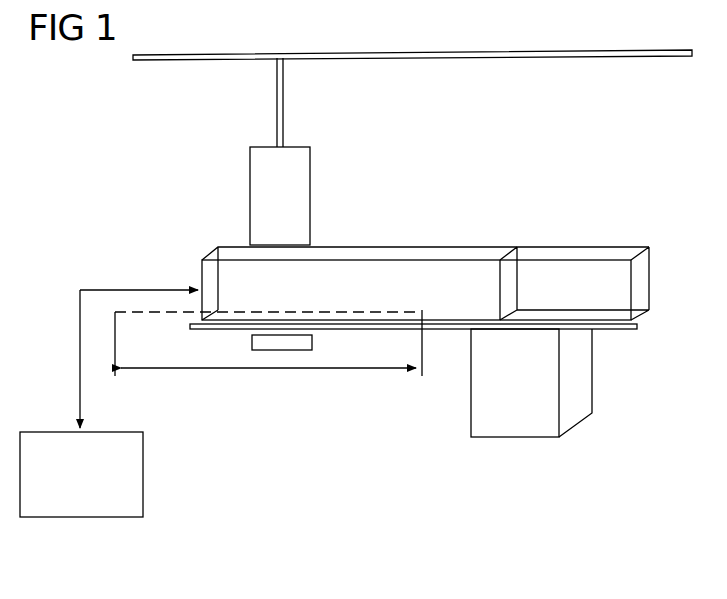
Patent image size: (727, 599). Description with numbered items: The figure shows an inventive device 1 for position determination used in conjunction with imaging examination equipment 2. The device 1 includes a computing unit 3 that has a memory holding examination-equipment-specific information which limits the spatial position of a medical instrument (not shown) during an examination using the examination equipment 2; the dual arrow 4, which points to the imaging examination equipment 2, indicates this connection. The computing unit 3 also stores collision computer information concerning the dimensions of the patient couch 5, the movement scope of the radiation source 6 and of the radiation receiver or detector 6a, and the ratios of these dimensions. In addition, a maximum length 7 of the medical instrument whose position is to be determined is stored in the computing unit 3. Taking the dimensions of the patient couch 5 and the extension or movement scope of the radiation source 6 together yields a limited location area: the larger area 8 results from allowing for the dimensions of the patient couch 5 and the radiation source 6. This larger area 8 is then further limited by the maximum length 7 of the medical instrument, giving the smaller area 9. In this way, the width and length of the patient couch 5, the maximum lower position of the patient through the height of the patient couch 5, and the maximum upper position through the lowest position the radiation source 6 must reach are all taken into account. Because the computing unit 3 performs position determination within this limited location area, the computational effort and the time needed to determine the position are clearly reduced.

The device for position determination 1 is at (191, 418).
The imaging examination equipment 2 is at (581, 190).
The computing unit 3 is at (120, 518).
The dual arrow 4 is at (78, 351).
The patient couch 5 is at (622, 332).
The radiation source 6 is at (310, 197).
The radiation receiver (detector) 6a is at (252, 338).
The maximum length 7 is at (331, 372).
The larger area 8 is at (644, 266).
The smaller area 9 is at (414, 249).